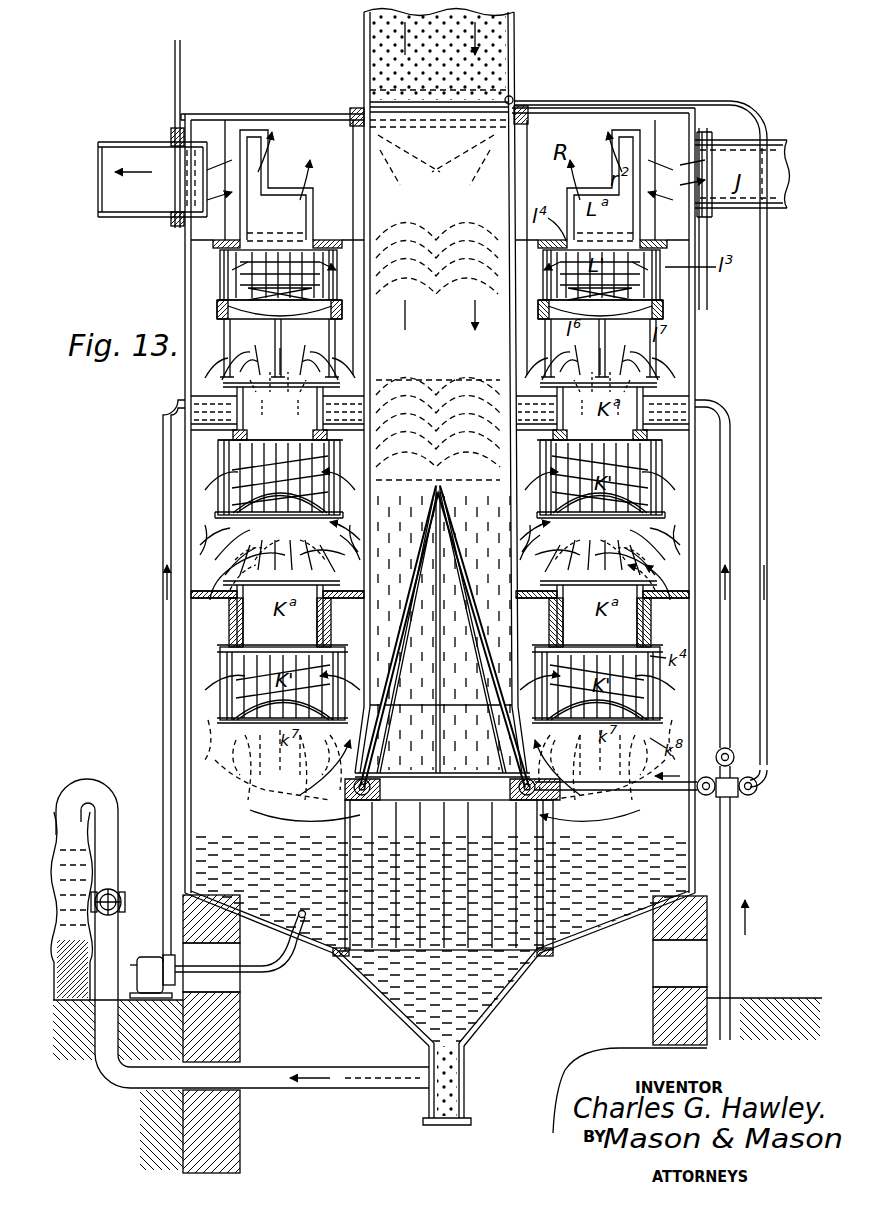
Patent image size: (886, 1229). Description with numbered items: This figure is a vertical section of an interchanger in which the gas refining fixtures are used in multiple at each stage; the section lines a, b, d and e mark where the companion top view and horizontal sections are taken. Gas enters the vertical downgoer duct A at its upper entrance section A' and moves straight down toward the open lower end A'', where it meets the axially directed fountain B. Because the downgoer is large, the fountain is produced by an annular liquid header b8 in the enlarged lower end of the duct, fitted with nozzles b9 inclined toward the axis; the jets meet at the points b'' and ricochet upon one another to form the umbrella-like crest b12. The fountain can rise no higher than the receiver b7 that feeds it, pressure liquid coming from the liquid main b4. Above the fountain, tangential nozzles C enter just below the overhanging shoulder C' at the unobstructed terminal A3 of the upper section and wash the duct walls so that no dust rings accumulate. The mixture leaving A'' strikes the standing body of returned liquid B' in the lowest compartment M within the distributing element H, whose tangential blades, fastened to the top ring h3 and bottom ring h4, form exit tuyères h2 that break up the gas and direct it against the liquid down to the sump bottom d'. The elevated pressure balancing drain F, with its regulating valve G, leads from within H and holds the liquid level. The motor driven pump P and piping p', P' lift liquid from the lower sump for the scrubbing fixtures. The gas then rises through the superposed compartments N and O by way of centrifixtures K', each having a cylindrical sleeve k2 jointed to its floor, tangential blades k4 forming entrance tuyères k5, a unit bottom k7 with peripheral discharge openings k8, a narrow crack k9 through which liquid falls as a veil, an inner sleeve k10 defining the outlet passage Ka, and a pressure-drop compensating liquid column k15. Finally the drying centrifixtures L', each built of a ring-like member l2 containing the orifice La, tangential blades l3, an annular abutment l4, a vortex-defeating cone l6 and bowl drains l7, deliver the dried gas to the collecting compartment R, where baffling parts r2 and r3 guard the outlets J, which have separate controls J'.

The downgoer duct A is at (452, 643).
The upper entrance section of duct A' is at (438, 36).
The unobstructed terminal of upper duct section A3 is at (490, 98).
The open lower end of duct A'' is at (570, 759).
The fountain B is at (439, 390).
The body of returned liquid B' is at (603, 873).
The tangential nozzles C is at (456, 352).
The overhanging shoulder C' is at (530, 92).
The elevated pressure balancing drain F is at (305, 1068).
The regulating valve G is at (122, 900).
The gas distributing element H is at (449, 875).
The gas outlet J is at (152, 179).
The outlet control J' is at (718, 219).
The outlet passage Ka is at (277, 392).
The gas-and-liquid mixing centrifixture K' is at (280, 507).
The outlet orifice La is at (276, 185).
The drying centrifixture L' is at (279, 313).
The lower compartment M is at (281, 768).
The superimposed compartment N is at (606, 548).
The upper compartment O is at (262, 330).
The motor driven pump P is at (152, 961).
The pump pipe P' is at (160, 681).
The collecting compartment R is at (277, 247).
The section line a— a is at (300, 123).
The section line b— b is at (454, 280).
The jet meeting points b'' is at (687, 635).
The liquid main b4 is at (757, 792).
The liquid receiver b7 is at (215, 392).
The annular liquid header b8 is at (352, 778).
The nozzles b9 is at (438, 778).
The fountain crest b12 is at (475, 357).
The section line d— d is at (458, 430).
The sump bottom d' is at (326, 974).
The section line e— e is at (790, 818).
The tangential exit tuyères h2 is at (598, 832).
The top ring h3 is at (345, 800).
The bottom ring h4 is at (380, 942).
The cylindrical sleeve k2 is at (186, 436).
The tangential blades k4 is at (230, 494).
The tangential entrance tuyères k5 is at (688, 308).
The unit bottom k7 is at (322, 516).
The peripheral liquid discharge openings k8 is at (292, 516).
The annular crack k9 is at (284, 466).
The inner sleeve k10 is at (258, 434).
The pressure-drop compensating liquid column k15 is at (238, 450).
The ring-like member l2 is at (342, 242).
The tangential blades l3 is at (240, 276).
The annular abutment l4 is at (300, 245).
The vortex-defeating cone l6 is at (262, 320).
The bowl drains l7 is at (284, 337).
The piping p' is at (240, 956).
The baffling part r2 is at (255, 178).
The baffling part r3 is at (678, 140).